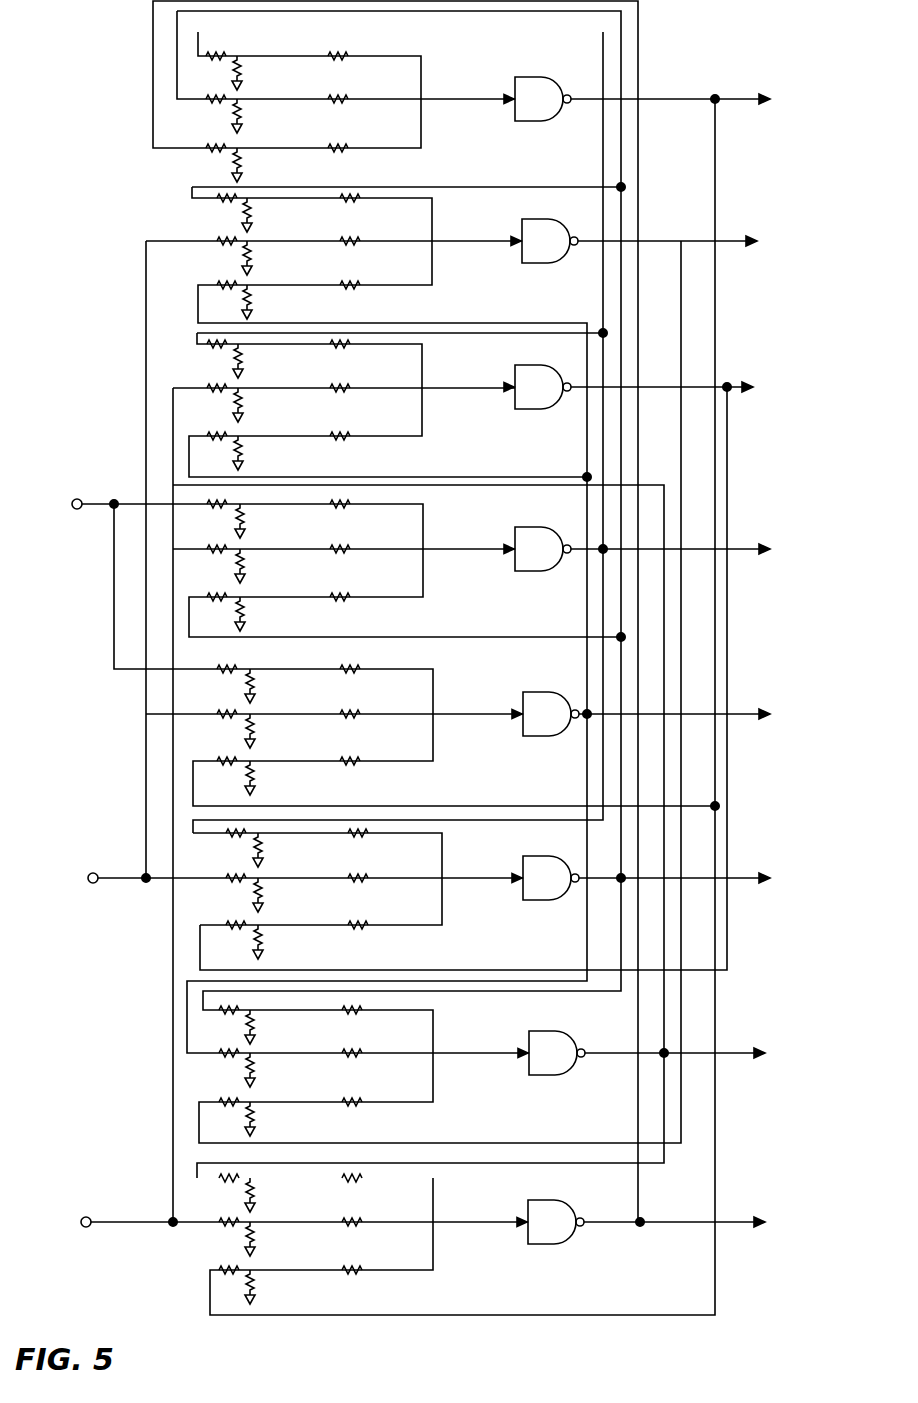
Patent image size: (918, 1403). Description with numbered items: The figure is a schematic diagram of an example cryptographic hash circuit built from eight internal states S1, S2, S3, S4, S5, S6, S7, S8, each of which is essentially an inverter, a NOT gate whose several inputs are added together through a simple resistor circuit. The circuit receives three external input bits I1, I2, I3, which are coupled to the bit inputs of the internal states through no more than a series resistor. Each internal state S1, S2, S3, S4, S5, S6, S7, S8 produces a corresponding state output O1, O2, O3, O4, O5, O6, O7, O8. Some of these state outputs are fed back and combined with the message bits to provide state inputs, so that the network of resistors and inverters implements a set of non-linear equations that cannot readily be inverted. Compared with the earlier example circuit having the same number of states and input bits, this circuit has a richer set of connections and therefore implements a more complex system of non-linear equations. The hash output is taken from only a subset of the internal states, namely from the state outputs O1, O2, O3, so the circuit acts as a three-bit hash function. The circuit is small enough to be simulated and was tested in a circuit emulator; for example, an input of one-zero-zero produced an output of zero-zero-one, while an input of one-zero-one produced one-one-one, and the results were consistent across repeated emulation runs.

The internal state S1 is at (526, 111).
The internal state S2 is at (533, 254).
The internal state S3 is at (531, 403).
The internal state S4 is at (531, 564).
The internal state S5 is at (540, 729).
The internal state S6 is at (545, 895).
The internal state S7 is at (539, 1068).
The internal state S8 is at (541, 1237).
The state output O1 is at (670, 87).
The state output O2 is at (672, 228).
The state output O3 is at (669, 374).
The state output O4 is at (676, 536).
The state output O5 is at (679, 698).
The state output O6 is at (679, 864).
The state output O7 is at (680, 1036).
The state output O8 is at (678, 1207).
The external input bit I1 is at (89, 492).
The external input bit I2 is at (111, 866).
The external input bit I3 is at (117, 1210).